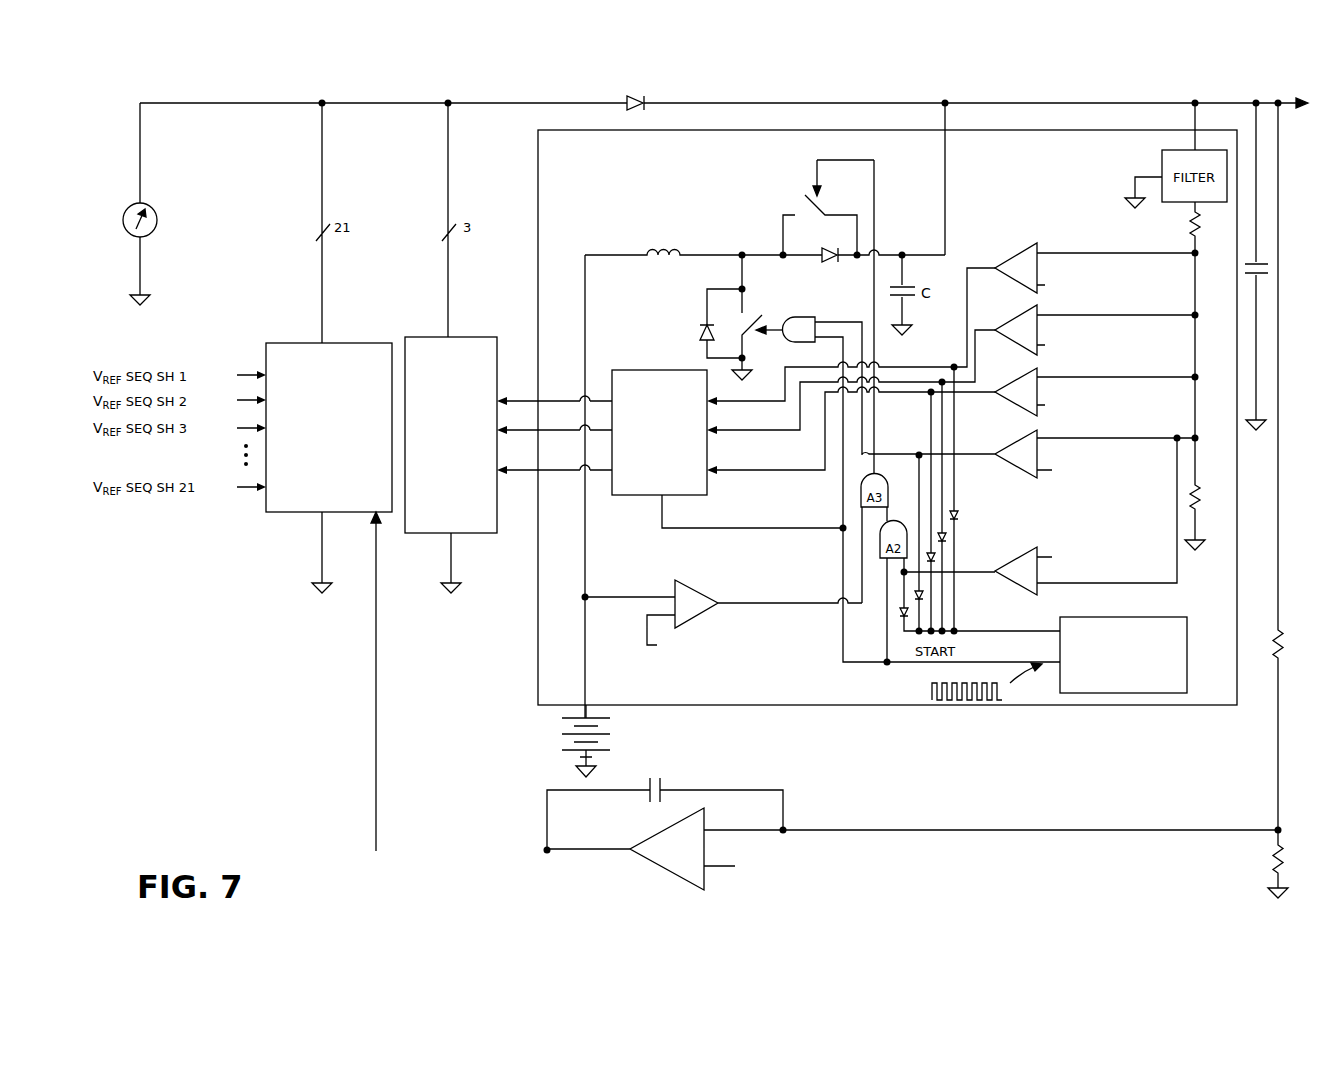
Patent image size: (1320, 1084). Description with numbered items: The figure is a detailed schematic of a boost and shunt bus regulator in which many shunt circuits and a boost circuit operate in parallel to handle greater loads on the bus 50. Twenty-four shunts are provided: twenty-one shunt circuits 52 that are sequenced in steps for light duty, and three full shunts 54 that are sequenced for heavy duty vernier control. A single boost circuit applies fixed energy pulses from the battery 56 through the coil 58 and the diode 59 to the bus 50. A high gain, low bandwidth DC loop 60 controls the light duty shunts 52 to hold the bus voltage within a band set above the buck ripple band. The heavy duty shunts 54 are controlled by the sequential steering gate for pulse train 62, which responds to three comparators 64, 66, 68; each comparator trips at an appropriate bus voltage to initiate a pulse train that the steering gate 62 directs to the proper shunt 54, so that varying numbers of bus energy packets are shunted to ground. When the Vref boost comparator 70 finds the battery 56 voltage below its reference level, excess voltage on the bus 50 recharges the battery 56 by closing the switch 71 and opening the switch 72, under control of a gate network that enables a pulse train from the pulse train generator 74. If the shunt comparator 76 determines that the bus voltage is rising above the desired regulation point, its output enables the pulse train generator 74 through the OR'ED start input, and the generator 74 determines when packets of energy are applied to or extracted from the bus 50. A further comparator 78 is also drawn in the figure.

The bus 50 is at (775, 103).
The shunt circuits 52 is at (310, 343).
The heavy duty shunts 54 is at (433, 337).
The battery 56 is at (616, 744).
The coil 58 is at (645, 248).
The diode 59 is at (829, 268).
The DC loop 60 is at (1006, 830).
The sequential steering gate for pulse train 62 is at (665, 370).
The comparator 64 is at (1027, 250).
The comparator 66 is at (1027, 312).
The comparator 68 is at (1027, 373).
The Vref boost comparator 70 is at (688, 592).
The switch 71 is at (800, 212).
The switch 72 is at (760, 318).
The pulse train generator 74 is at (1152, 617).
The shunt comparator 76 is at (1027, 555).
The comparator VREF BOOST 78 is at (1027, 439).